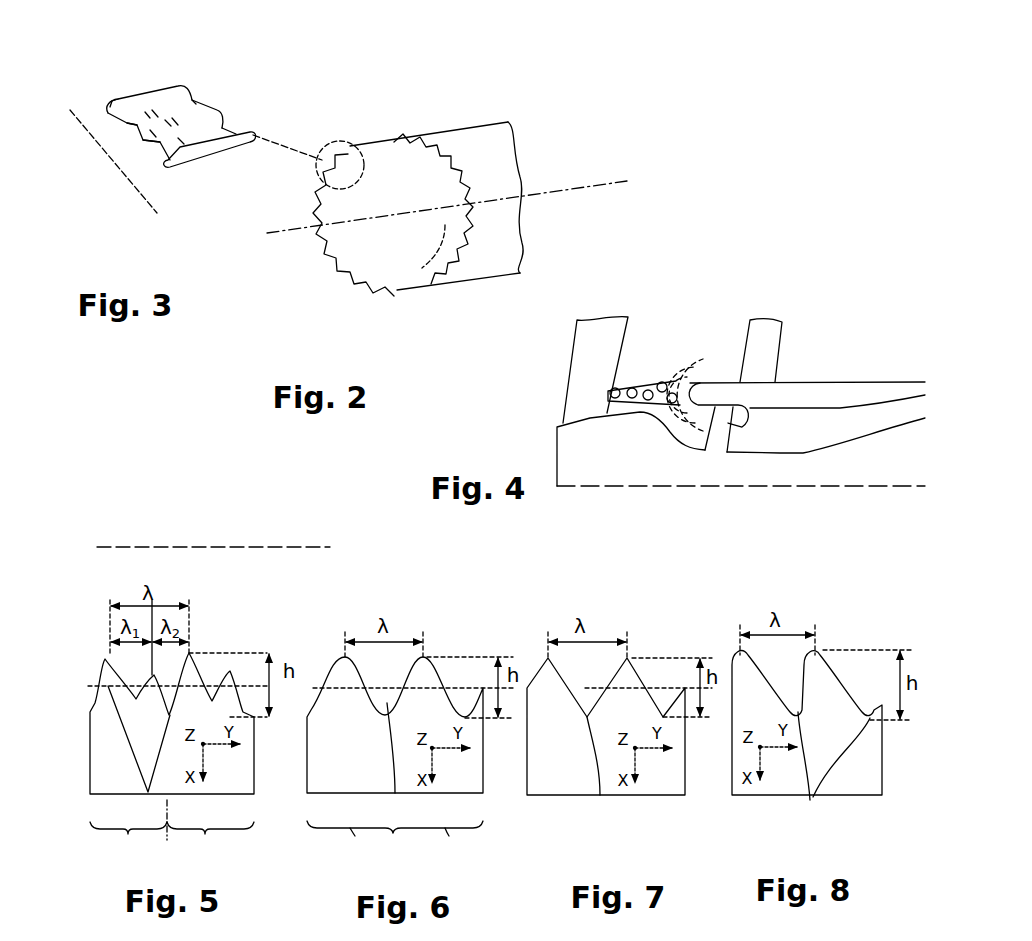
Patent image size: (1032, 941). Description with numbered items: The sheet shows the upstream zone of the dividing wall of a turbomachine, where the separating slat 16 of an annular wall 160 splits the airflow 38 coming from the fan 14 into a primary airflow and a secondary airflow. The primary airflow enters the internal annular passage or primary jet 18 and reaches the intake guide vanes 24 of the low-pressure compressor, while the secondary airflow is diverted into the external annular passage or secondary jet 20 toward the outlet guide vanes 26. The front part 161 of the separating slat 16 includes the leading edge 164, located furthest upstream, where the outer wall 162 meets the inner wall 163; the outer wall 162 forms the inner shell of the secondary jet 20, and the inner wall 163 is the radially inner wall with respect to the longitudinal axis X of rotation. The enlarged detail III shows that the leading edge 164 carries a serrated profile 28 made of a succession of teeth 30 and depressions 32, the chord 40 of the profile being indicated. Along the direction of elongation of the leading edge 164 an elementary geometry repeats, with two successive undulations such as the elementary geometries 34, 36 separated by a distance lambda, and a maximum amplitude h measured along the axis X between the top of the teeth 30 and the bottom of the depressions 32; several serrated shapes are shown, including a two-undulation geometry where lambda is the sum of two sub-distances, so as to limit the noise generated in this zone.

In FIG. 4, the fan 14 is at (590, 350).
In FIG. 3, the separating slat 16 is at (126, 92).
In FIG. 2, the separating slat 16 is at (455, 278).
In FIG. 4, the primary jet 18 is at (741, 449).
In FIG. 4, the secondary jet 20 is at (807, 379).
In FIG. 4, the intake guide vanes 24 is at (742, 395).
In FIG. 4, the outlet guide vanes 26 is at (762, 340).
In FIG. 3, the profile 28 is at (137, 128).
In FIG. 2, the profile 28 is at (322, 237).
In FIG. 5, the profile 28 is at (190, 657).
In FIG. 6, the profile 28 is at (447, 673).
In FIG. 7, the profile 28 is at (638, 677).
In FIG. 8, the profile 28 is at (837, 678).
In FIG. 3, the teeth 30 is at (114, 102).
In FIG. 5, the teeth 30 is at (143, 679).
In FIG. 6, the teeth 30 is at (425, 670).
In FIG. 7, the teeth 30 is at (625, 675).
In FIG. 8, the teeth 30 is at (825, 675).
In FIG. 5, the depressions 32 is at (139, 720).
In FIG. 6, the depressions 32 is at (394, 764).
In FIG. 7, the depressions 32 is at (600, 772).
In FIG. 8, the depressions 32 is at (832, 771).
In FIG. 5, the elementary geometry 34 is at (172, 843).
In FIG. 6, the elementary geometry 36 is at (395, 844).
In FIG. 4, the airflow 38 is at (650, 382).
In FIG. 3, the chord 40 is at (236, 148).
In FIG. 3, the annular wall 160 is at (198, 112).
In FIG. 2, the annular wall 160 is at (427, 122).
In FIG. 4, the annular wall 160 is at (815, 397).
In FIG. 2, the front part 161 is at (464, 177).
In FIG. 3, the outer wall 162 is at (224, 122).
In FIG. 3, the inner wall 163 is at (194, 168).
In FIG. 3, the leading edge 164 is at (152, 160).
In FIG. 2, the leading edge 164 is at (366, 283).
In FIG. 4, the leading edge 164 is at (693, 385).
In FIG. 5, the leading edge 164 is at (88, 697).
In FIG. 6, the leading edge 164 is at (328, 671).
In FIG. 7, the leading edge 164 is at (535, 661).
In FIG. 8, the leading edge 164 is at (727, 657).
In FIG. 2, the longitudinal axis X is at (563, 188).
In FIG. 2, the detail III is at (340, 141).